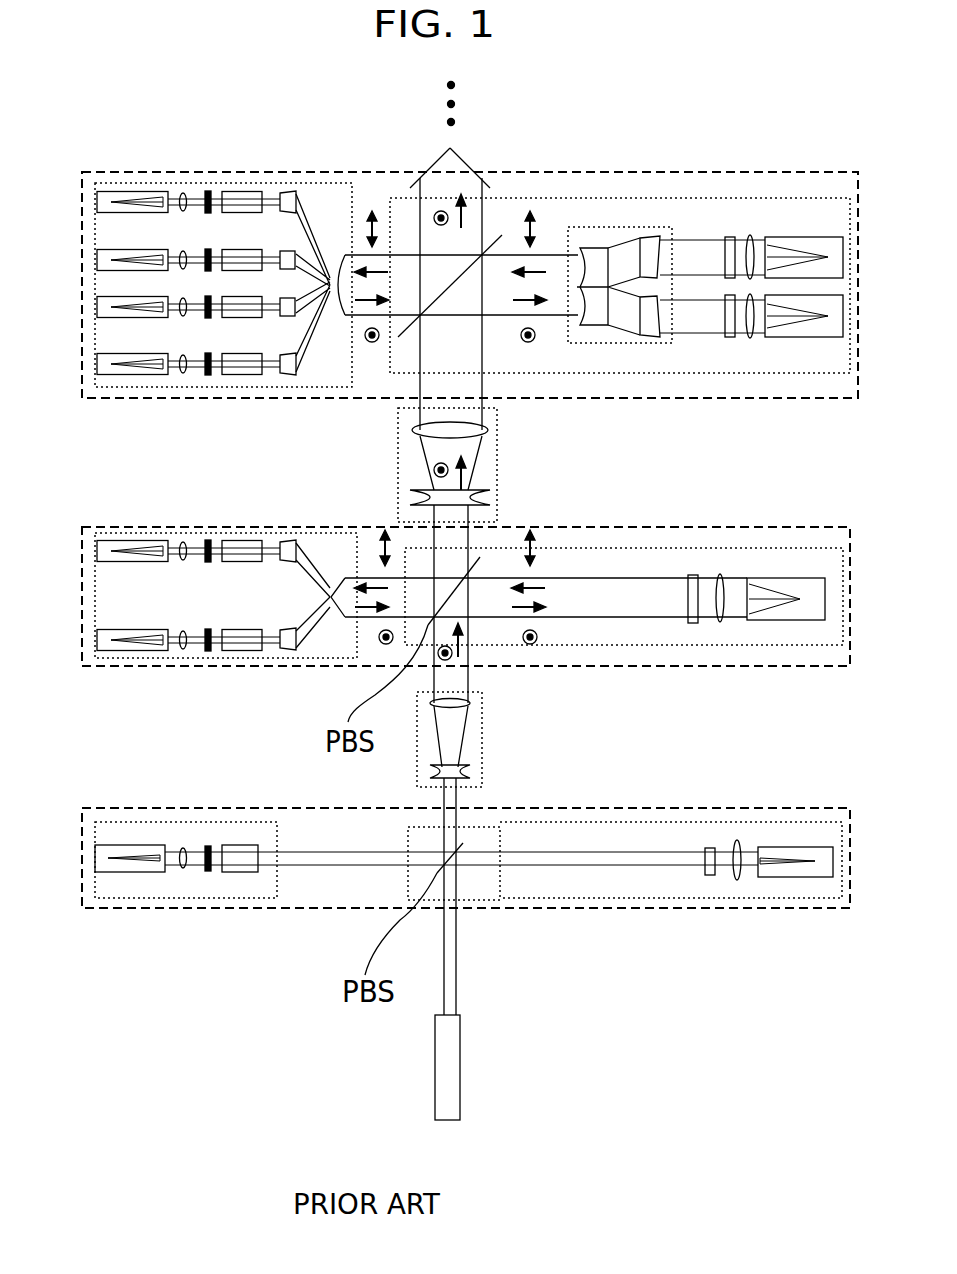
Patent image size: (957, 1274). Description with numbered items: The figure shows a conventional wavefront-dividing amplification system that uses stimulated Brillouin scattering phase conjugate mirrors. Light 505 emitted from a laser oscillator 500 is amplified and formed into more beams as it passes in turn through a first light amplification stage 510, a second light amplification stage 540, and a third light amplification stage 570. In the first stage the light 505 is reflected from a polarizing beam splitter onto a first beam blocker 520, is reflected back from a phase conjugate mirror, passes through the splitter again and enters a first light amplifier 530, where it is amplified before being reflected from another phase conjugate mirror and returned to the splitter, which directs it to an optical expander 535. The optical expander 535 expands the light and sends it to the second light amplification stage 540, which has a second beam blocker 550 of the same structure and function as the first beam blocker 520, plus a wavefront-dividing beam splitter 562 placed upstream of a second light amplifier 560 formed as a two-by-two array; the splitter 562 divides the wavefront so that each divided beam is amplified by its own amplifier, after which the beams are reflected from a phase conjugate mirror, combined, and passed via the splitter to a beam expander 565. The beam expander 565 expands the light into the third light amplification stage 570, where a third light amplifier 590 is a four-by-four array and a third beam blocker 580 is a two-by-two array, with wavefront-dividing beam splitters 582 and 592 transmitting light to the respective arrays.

The laser oscillator 500 is at (460, 1060).
The light 505 is at (456, 950).
The first light amplification stage 510 is at (466, 865).
The first beam blocker 520 is at (732, 900).
The first light amplifier 530 is at (200, 910).
The optical expander 535 is at (482, 770).
The second light amplification stage 540 is at (466, 604).
The second beam blocker 550 is at (655, 647).
The second light amplifier 560 is at (170, 666).
The wavefront-dividing beam splitter 562 is at (312, 666).
The beam expander 565 is at (497, 512).
The third light amplification stage 570 is at (470, 279).
The third beam blocker 580 is at (620, 332).
The wavefront-dividing beam splitter 582 is at (648, 345).
The third light amplifier 590 is at (190, 397).
The wavefront-dividing beam splitter 592 is at (295, 387).